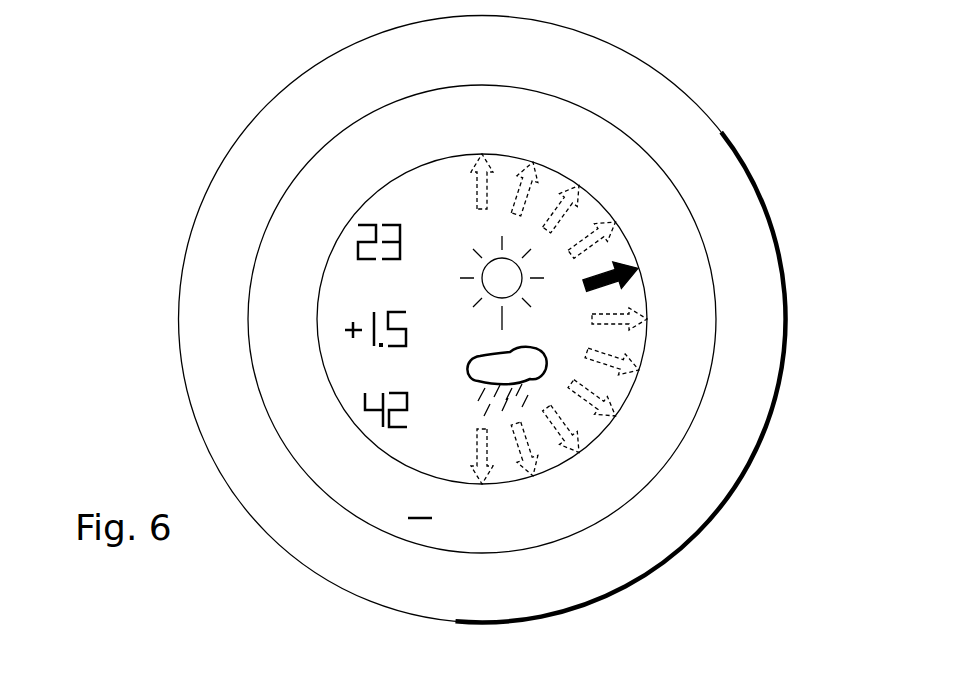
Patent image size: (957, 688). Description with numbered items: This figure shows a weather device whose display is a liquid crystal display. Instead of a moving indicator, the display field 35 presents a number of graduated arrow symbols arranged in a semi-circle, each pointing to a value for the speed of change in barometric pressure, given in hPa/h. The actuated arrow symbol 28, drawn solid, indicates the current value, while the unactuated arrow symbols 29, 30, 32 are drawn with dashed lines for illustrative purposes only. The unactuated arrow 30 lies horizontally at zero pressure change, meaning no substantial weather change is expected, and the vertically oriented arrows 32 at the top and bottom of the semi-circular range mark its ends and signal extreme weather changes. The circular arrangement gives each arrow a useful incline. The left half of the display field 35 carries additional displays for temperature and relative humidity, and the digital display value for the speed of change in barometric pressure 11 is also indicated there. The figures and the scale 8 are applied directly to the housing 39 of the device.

The scale 8 is at (553, 127).
The digital display value for the speed of change in barometric pressure 11 is at (348, 350).
The actuated arrow symbol 28 is at (620, 263).
The unactuated arrow symbol 29 is at (607, 400).
The unactuated horizontal arrow 30 is at (632, 312).
The vertically oriented arrows 32 is at (427, 163).
The display field 35 is at (363, 202).
The housing 39 is at (690, 498).